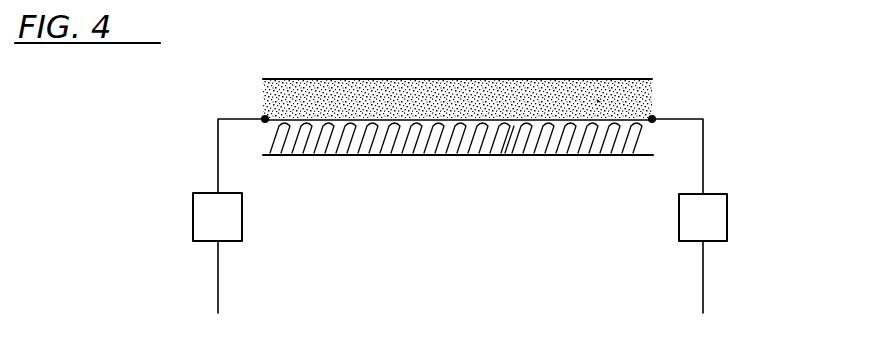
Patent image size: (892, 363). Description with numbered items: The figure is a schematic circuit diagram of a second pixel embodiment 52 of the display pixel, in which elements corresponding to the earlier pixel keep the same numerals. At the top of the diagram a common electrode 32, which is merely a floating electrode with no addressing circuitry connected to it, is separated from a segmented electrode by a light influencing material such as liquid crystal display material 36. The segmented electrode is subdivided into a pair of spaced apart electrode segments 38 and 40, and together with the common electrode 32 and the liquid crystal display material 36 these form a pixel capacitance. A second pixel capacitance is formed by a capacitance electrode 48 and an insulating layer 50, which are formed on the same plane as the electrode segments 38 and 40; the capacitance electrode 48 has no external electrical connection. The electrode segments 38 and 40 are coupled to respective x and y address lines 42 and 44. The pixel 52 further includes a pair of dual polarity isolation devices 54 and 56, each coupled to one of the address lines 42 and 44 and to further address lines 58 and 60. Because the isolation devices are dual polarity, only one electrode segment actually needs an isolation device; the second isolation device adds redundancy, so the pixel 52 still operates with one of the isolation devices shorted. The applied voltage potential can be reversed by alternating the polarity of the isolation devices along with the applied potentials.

The common electrode 32 is at (452, 79).
The liquid crystal display material 36 is at (597, 100).
The electrode segment 38 is at (300, 118).
The electrode segment 40 is at (622, 118).
The x address line 42 is at (218, 142).
The y address line 44 is at (703, 167).
The capacitance electrode 48 is at (443, 155).
The insulating layer 50 is at (518, 140).
The second pixel embodiment 52 is at (742, 126).
The dual polarity isolation device 54 is at (193, 222).
The dual polarity isolation device 56 is at (727, 218).
The address line 58 is at (218, 282).
The address line 60 is at (703, 292).